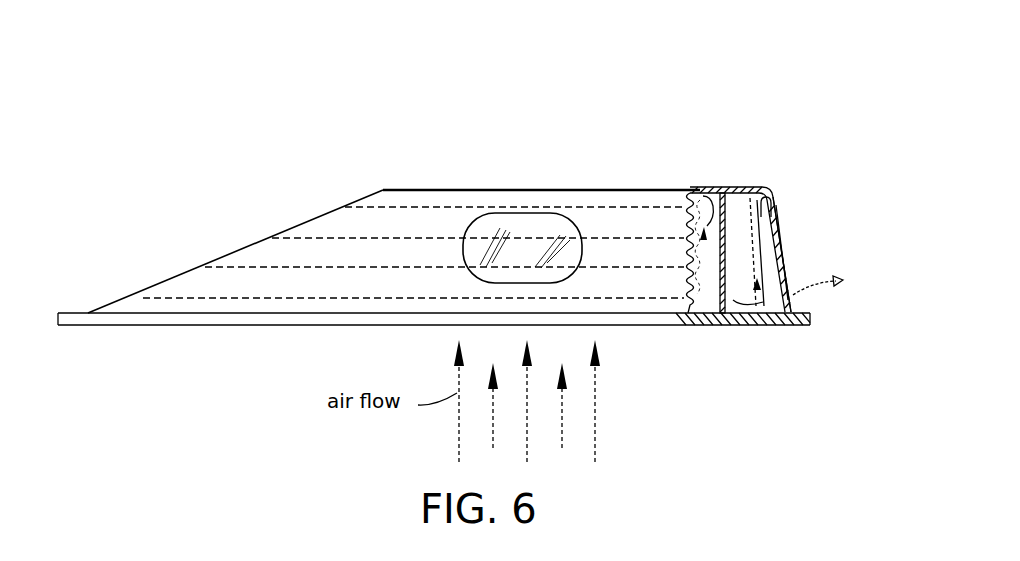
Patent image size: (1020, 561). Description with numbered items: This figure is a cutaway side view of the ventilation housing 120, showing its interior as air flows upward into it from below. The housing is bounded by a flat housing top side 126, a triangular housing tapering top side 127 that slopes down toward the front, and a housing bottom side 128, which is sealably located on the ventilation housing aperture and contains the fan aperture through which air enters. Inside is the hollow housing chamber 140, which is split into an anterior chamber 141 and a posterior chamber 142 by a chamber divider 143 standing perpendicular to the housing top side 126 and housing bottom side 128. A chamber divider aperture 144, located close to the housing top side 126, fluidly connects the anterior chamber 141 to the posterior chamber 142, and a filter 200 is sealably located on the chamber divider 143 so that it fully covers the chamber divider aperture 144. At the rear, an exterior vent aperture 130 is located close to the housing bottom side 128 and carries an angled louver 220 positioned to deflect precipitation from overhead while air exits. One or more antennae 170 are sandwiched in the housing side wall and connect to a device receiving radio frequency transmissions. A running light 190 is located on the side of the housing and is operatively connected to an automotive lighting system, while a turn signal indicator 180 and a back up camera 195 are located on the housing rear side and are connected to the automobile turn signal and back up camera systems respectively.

The ventilation housing 120 is at (230, 125).
The housing top side 126 is at (612, 186).
The triangular housing tapering top side 127 is at (265, 240).
The housing bottom side 128 is at (157, 326).
The exterior vent aperture 130 is at (803, 317).
The housing chamber 140 is at (698, 203).
The anterior chamber 141 is at (690, 312).
The posterior chamber 142 is at (750, 312).
The chamber divider 143 is at (723, 312).
The chamber divider aperture 144 is at (707, 190).
The antennae 170 is at (350, 238).
The turn signal indicator 180 is at (792, 246).
The running light 190 is at (533, 221).
The back up camera 195 is at (787, 200).
The filter 200 is at (747, 193).
The angled louver 220 is at (796, 289).